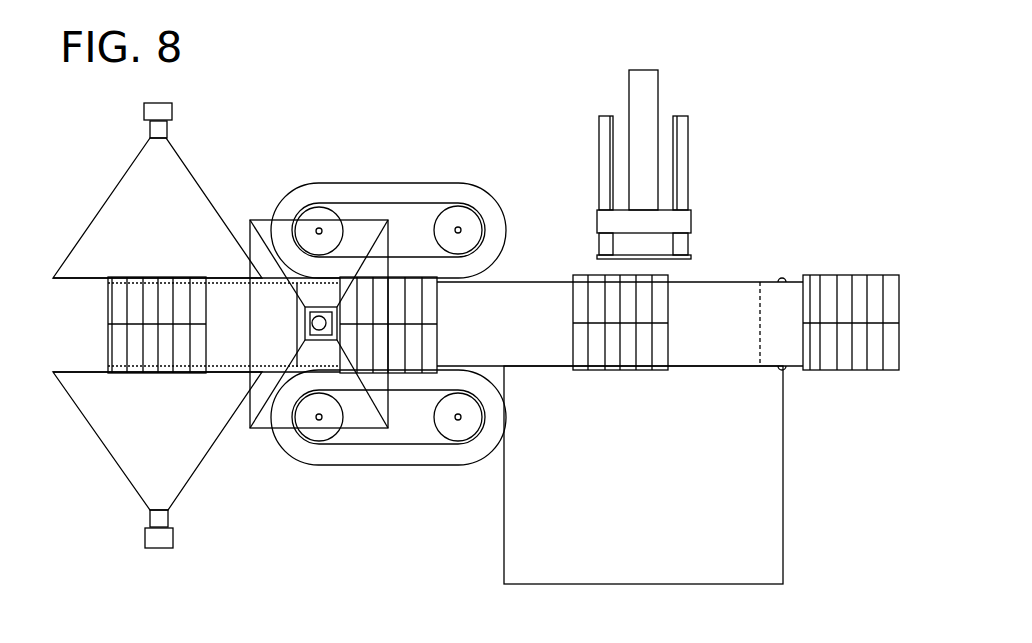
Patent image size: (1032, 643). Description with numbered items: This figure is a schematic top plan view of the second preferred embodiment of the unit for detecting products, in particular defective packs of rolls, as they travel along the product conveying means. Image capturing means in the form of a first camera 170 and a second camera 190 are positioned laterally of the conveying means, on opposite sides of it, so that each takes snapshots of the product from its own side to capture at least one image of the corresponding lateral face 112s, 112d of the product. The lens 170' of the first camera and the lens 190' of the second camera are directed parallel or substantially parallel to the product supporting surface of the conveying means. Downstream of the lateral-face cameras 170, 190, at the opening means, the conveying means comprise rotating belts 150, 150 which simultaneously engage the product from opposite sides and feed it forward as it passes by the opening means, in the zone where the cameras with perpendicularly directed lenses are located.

The rotating belts 150 is at (409, 197).
The first camera 170 is at (216, 92).
The lens 170' is at (223, 125).
The lateral face 112s is at (150, 277).
The lateral face 112d is at (137, 375).
The second camera 190 is at (174, 573).
The lens 190' is at (213, 519).